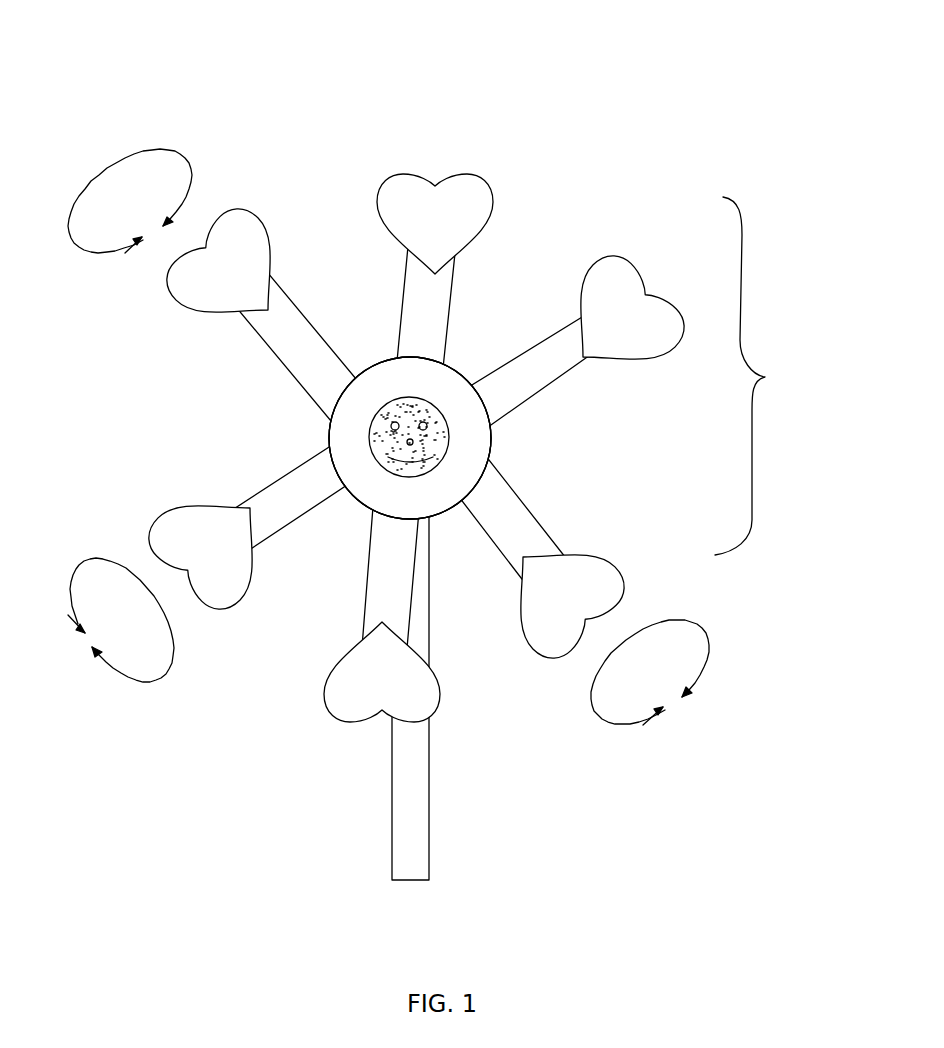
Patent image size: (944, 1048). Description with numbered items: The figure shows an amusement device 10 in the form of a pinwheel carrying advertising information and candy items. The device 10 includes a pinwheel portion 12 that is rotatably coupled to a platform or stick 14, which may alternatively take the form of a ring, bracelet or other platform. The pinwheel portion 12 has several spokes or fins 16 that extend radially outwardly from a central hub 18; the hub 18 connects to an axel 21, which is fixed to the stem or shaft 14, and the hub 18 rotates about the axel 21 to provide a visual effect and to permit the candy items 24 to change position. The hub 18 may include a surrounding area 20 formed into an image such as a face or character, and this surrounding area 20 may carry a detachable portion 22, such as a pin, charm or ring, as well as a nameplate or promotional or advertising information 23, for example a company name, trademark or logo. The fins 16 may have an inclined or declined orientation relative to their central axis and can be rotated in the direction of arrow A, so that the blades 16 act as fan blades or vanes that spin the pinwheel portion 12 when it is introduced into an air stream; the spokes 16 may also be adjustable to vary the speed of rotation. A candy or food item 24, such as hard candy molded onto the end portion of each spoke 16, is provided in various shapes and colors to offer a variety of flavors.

The amusement device 10 is at (379, 29).
The pinwheel portion 12 is at (765, 377).
The platform or stick 14 is at (428, 730).
The spokes or fins 16 is at (291, 298).
The central hub 18 is at (330, 423).
The surrounding area 20 is at (390, 357).
The axel 21 is at (410, 442).
The detachable portion 22 is at (449, 441).
The nameplate or promotional or advertising information 23 is at (357, 497).
The candy items 24 is at (242, 213).